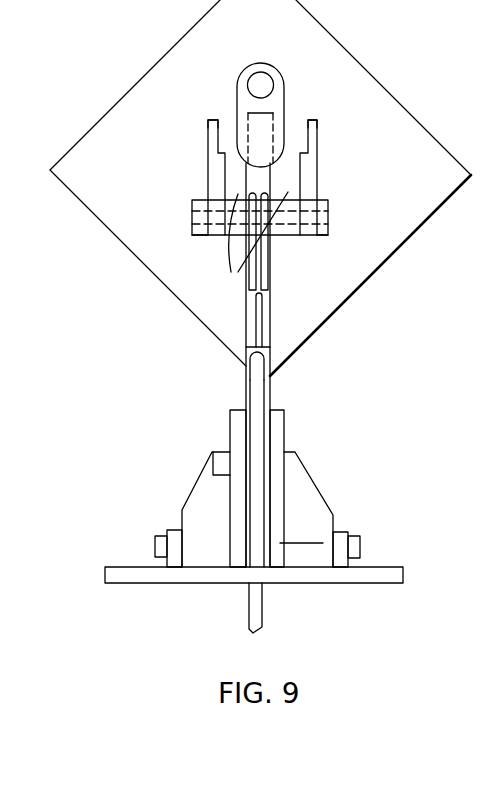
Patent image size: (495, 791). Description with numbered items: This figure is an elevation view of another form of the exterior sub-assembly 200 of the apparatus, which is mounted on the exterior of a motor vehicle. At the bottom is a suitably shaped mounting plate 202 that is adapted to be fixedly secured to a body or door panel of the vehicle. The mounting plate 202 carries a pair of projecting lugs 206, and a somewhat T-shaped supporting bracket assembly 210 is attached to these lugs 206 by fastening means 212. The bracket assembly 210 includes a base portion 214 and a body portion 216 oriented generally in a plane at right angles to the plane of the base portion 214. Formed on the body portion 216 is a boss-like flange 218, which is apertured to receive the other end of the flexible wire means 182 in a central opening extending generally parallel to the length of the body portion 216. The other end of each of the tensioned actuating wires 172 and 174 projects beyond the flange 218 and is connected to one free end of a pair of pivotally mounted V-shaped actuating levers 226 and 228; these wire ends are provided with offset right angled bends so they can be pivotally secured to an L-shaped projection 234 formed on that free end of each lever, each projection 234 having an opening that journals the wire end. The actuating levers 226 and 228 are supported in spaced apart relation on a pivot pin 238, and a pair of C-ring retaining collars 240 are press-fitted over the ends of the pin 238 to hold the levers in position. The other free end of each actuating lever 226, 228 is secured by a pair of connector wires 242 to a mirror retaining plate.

The tensioned actuating wire 172 is at (258, 256).
The tensioned actuating wire 174 is at (265, 288).
The flexible wire means 182 is at (257, 401).
The exterior sub-assembly 200 is at (216, 427).
The mounting plate 202 is at (390, 577).
The projecting lug 206 is at (175, 561).
The supporting bracket assembly 210 is at (322, 468).
The fastening means 212 is at (212, 458).
The base portion 214 is at (306, 531).
The body portion 216 is at (266, 350).
The boss-like flange 218 is at (246, 326).
The V-shaped actuating lever 226 is at (303, 194).
The V-shaped actuating lever 228 is at (212, 162).
The L-shaped projection 234 is at (240, 247).
The pivot pin 238 is at (318, 222).
The C-ring retaining collar 240 is at (201, 234).
The connector wire 242 is at (212, 127).